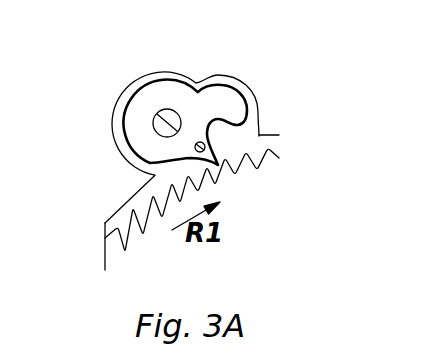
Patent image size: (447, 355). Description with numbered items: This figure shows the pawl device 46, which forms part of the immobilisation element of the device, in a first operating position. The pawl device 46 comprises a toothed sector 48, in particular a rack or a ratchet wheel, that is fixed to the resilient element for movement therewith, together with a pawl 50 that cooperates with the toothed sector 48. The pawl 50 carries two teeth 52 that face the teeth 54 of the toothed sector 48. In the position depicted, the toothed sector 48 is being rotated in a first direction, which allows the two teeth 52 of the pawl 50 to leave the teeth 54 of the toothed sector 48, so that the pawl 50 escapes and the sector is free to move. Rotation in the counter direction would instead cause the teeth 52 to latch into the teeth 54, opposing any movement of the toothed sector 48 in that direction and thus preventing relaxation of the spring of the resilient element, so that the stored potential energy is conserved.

The pawl device 46 is at (106, 50).
The toothed sector 48 is at (247, 240).
The pawl 50 is at (165, 93).
The teeth of the pawl 52 is at (231, 108).
The teeth of the toothed sector 54 is at (128, 239).